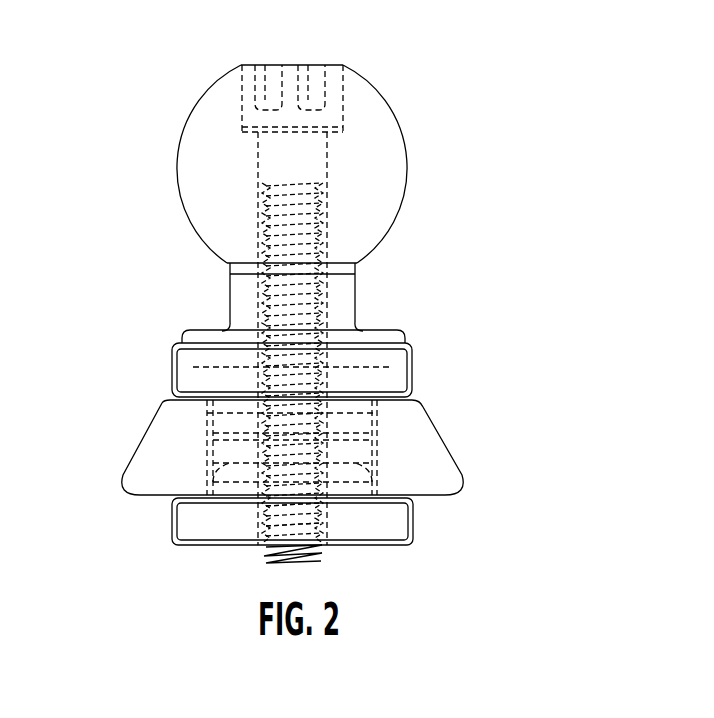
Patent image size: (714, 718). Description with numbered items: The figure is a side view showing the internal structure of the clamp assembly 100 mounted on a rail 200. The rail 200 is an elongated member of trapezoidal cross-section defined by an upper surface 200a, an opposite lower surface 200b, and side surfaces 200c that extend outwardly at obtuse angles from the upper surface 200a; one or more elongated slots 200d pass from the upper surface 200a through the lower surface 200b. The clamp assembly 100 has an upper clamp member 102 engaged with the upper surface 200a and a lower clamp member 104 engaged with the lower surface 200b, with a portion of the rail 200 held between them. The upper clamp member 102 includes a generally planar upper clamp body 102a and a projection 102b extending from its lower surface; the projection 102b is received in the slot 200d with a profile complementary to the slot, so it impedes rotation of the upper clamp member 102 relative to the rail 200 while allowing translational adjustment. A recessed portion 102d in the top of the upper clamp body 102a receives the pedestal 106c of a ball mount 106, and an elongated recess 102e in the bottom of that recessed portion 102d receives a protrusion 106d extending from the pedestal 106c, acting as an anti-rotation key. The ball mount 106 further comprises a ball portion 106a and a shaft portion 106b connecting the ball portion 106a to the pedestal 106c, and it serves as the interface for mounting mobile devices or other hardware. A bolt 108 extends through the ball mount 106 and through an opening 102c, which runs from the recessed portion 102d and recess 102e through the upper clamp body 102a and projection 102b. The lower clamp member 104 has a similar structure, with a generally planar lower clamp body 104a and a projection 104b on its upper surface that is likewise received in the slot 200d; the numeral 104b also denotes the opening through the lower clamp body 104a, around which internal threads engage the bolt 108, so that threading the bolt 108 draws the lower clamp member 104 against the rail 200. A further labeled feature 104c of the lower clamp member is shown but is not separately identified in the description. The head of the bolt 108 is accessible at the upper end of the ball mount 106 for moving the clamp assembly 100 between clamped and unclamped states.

The clamp assembly 100 is at (208, 60).
The upper clamp member 102 is at (512, 360).
The upper clamp body 102a is at (403, 373).
The projection 102b is at (362, 423).
The opening 102c is at (330, 377).
The recessed portion 102d is at (235, 355).
The recess 102e is at (388, 360).
The lower clamp member 104 is at (368, 535).
The lower clamp body 104a is at (227, 530).
The projection 104b is at (362, 470).
The nut threads 104c is at (324, 527).
The ball mount 106 is at (517, 177).
The ball portion 106a is at (392, 157).
The shaft portion 106b is at (344, 282).
The pedestal 106c is at (218, 362).
The protrusion 106d is at (318, 383).
The bolt 108 is at (314, 148).
The rail 200 is at (116, 403).
The upper surface 200a is at (172, 385).
The lower surface 200b is at (425, 499).
The side surfaces 200c is at (148, 455).
The elongated slot 200d is at (226, 452).